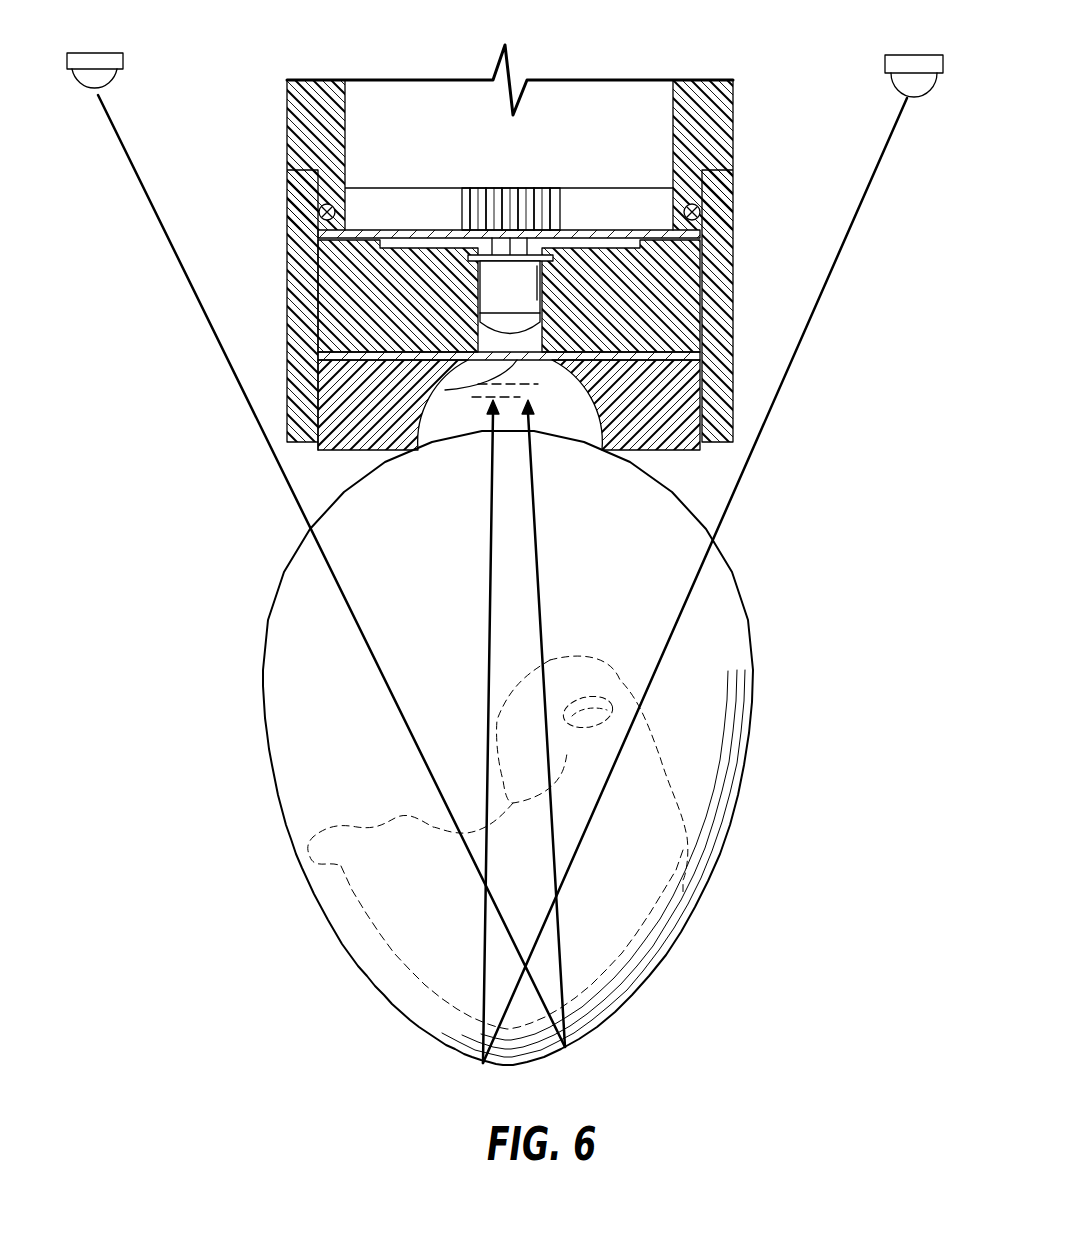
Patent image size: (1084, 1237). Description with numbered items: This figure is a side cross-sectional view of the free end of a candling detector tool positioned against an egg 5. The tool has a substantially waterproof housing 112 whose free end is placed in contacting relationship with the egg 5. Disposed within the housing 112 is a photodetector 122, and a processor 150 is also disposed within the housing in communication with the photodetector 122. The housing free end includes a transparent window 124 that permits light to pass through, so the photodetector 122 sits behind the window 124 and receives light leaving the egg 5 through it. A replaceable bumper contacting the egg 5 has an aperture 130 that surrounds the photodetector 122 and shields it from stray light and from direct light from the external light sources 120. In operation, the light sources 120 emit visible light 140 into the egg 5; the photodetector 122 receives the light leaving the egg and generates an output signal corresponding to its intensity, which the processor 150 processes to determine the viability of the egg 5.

The egg 5 is at (753, 666).
The housing 112 is at (735, 120).
The light sources 120 is at (125, 60).
The photodetector 122 is at (491, 282).
The transparent window 124 is at (318, 403).
The aperture 130 is at (453, 430).
The visible light 140 is at (490, 553).
The processor 150 is at (622, 100).